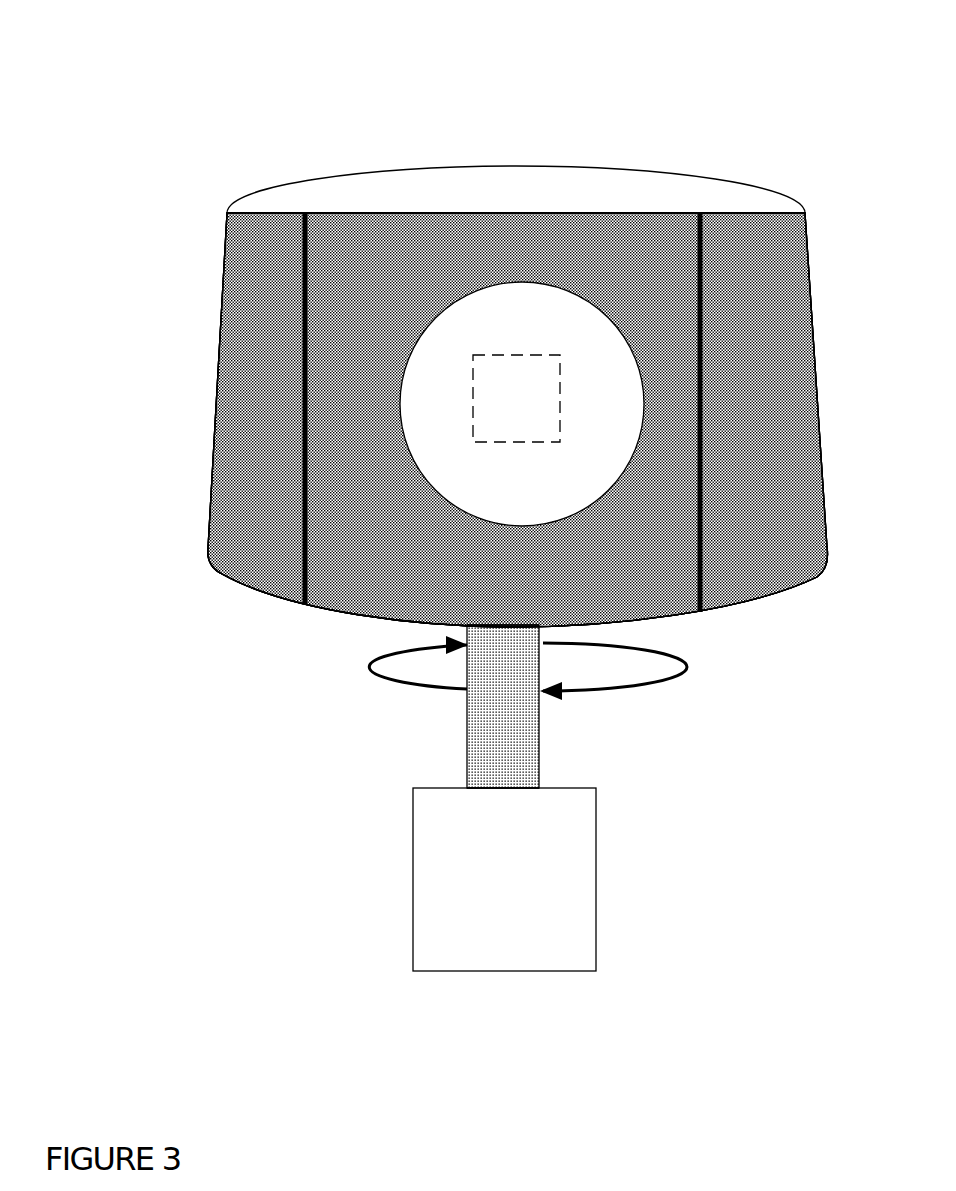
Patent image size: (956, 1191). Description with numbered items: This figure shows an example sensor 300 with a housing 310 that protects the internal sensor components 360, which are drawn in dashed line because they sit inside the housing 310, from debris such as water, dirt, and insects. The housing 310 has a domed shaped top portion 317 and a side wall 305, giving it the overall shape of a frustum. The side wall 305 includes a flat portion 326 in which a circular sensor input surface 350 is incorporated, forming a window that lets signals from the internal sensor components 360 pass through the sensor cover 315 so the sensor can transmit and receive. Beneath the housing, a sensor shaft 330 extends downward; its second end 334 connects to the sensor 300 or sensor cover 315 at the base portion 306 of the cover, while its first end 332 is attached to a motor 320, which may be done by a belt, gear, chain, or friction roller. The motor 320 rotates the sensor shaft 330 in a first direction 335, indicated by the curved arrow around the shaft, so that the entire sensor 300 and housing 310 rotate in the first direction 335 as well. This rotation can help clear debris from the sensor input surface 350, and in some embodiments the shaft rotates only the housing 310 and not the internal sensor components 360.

The sensor 300 is at (436, 487).
The side wall 305 is at (470, 386).
The base portion 306 is at (273, 600).
The housing 310 is at (257, 378).
The sensor cover 315 is at (257, 303).
The domed shaped top portion 317 is at (340, 184).
The motor 320 is at (413, 870).
The flat portion 326 is at (390, 548).
The sensor shaft 330 is at (428, 705).
The first end 332 is at (485, 773).
The second end 334 is at (503, 630).
The first direction 335 is at (367, 665).
The sensor input surface 350 is at (403, 440).
The internal sensor components 360 is at (473, 373).